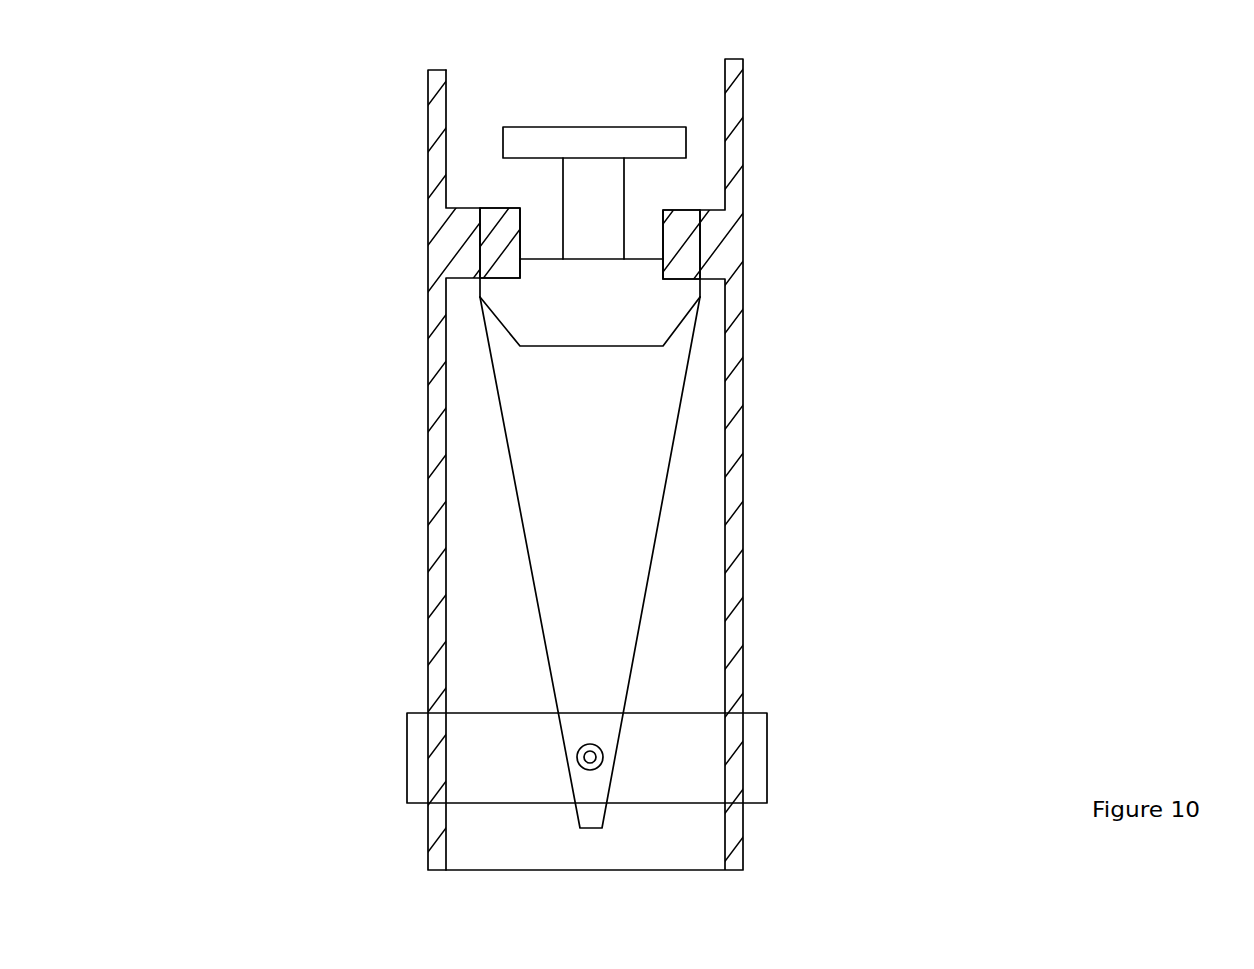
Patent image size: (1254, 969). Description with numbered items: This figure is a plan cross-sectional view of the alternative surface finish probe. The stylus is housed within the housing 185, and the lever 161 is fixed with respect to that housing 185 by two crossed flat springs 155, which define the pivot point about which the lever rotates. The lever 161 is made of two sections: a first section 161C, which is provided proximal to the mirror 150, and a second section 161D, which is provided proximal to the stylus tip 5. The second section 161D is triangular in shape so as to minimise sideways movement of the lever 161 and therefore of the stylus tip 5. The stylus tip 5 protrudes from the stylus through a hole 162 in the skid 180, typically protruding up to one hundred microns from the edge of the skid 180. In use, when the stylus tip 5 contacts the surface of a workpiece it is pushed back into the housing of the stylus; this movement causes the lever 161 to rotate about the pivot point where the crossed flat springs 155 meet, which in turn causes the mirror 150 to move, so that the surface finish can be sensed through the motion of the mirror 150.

The stylus tip 5 is at (590, 757).
The mirror 150 is at (676, 147).
The crossed flat springs 155 is at (550, 283).
The lever 161 is at (890, 443).
The first section of the lever 161C is at (610, 227).
The second section of the lever 161D is at (650, 402).
The hole in the skid 162 is at (575, 747).
The skid 180 is at (753, 797).
The housing 185 is at (440, 260).